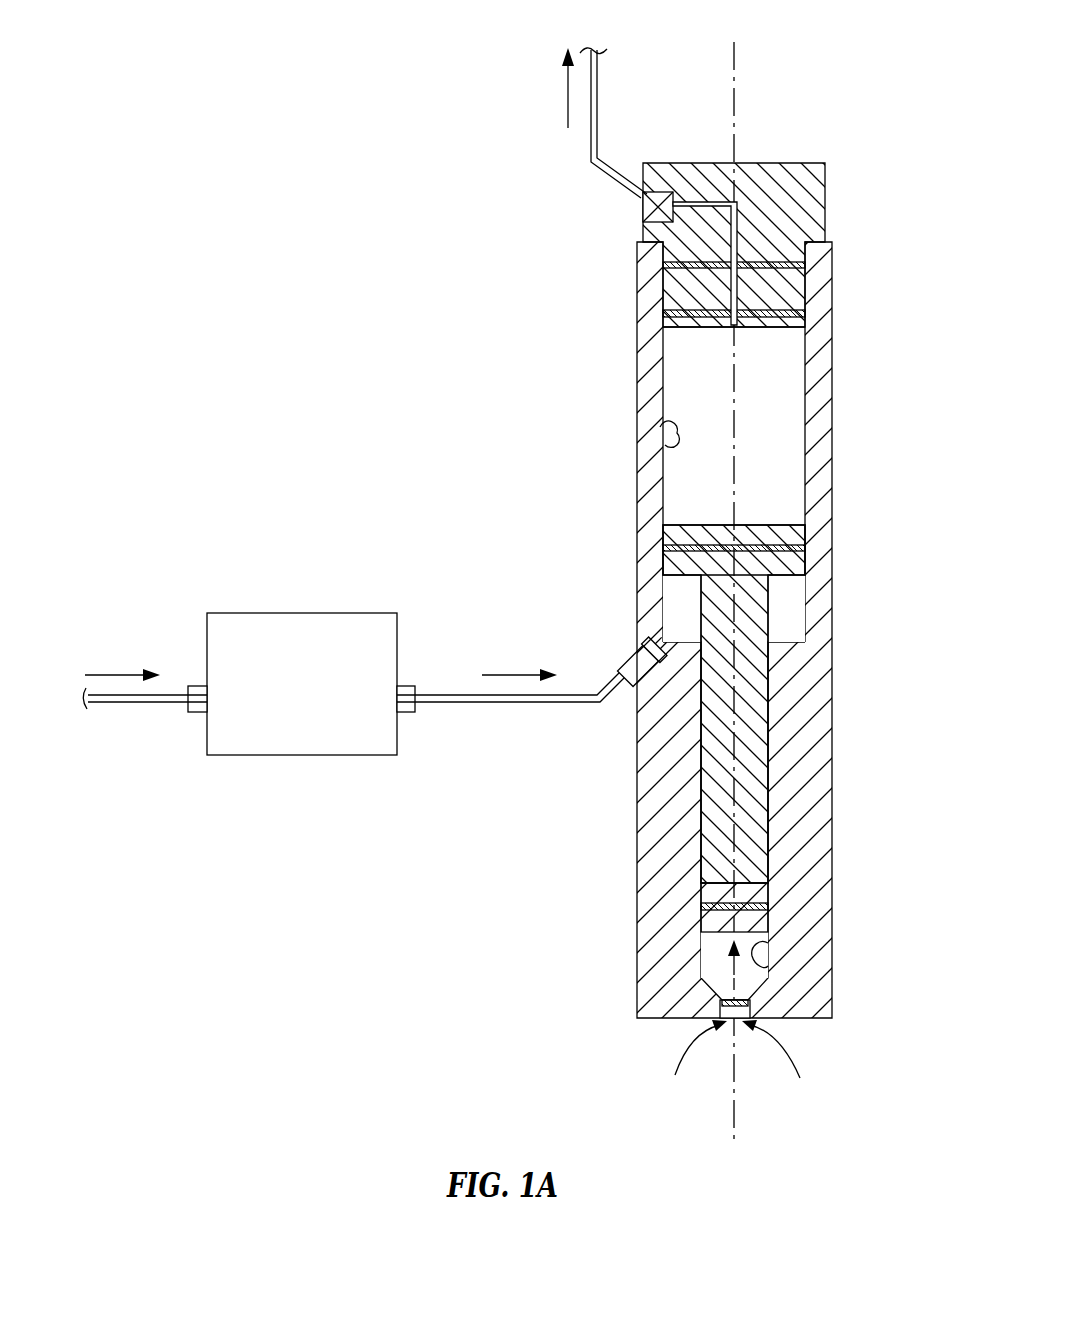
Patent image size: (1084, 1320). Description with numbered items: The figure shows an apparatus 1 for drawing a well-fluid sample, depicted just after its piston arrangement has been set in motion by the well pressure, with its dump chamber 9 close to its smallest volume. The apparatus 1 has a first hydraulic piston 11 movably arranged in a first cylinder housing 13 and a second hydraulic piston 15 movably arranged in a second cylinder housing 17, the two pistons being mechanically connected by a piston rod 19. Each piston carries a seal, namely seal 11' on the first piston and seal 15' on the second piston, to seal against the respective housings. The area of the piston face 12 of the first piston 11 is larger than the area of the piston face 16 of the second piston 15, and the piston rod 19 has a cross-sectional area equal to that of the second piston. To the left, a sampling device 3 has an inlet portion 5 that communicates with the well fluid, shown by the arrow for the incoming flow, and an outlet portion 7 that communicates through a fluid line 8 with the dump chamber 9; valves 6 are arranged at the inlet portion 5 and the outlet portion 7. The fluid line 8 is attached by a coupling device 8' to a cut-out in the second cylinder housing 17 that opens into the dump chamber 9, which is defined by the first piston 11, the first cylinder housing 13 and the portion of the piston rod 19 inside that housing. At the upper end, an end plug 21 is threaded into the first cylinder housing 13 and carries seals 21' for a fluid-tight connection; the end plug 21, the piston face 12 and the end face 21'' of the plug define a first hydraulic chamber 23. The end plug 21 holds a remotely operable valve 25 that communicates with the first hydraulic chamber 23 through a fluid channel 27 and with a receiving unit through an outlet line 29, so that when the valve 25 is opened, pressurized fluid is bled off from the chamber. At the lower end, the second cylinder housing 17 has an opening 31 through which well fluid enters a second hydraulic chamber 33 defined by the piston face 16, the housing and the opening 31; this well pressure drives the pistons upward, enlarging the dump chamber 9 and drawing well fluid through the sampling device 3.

The apparatus 1 is at (352, 113).
The sampling device 3 is at (261, 592).
The inlet portion 5 is at (196, 712).
The valves 6 is at (198, 686).
The outlet portion 7 is at (412, 712).
The fluid line 8 is at (532, 725).
The coupling device 8' is at (625, 649).
The dump chamber 9 is at (806, 609).
The first hydraulic piston 11 is at (688, 550).
The seal 11' is at (783, 534).
The piston face 12 is at (760, 525).
The first cylinder housing 13 is at (637, 373).
The second hydraulic piston 15 is at (796, 895).
The seal 15' is at (802, 914).
The piston face 16 is at (702, 955).
The second cylinder housing 17 is at (832, 690).
The piston rod 19 is at (766, 777).
The end plug 21 is at (778, 245).
The seals 21' is at (787, 289).
The end face 21'' is at (734, 366).
The first hydraulic chamber 23 is at (660, 427).
The valve 25 is at (652, 192).
The fluid channel 27 is at (740, 222).
The outlet line 29 is at (598, 83).
The opening 31 is at (750, 1000).
The second hydraulic chamber 33 is at (768, 943).